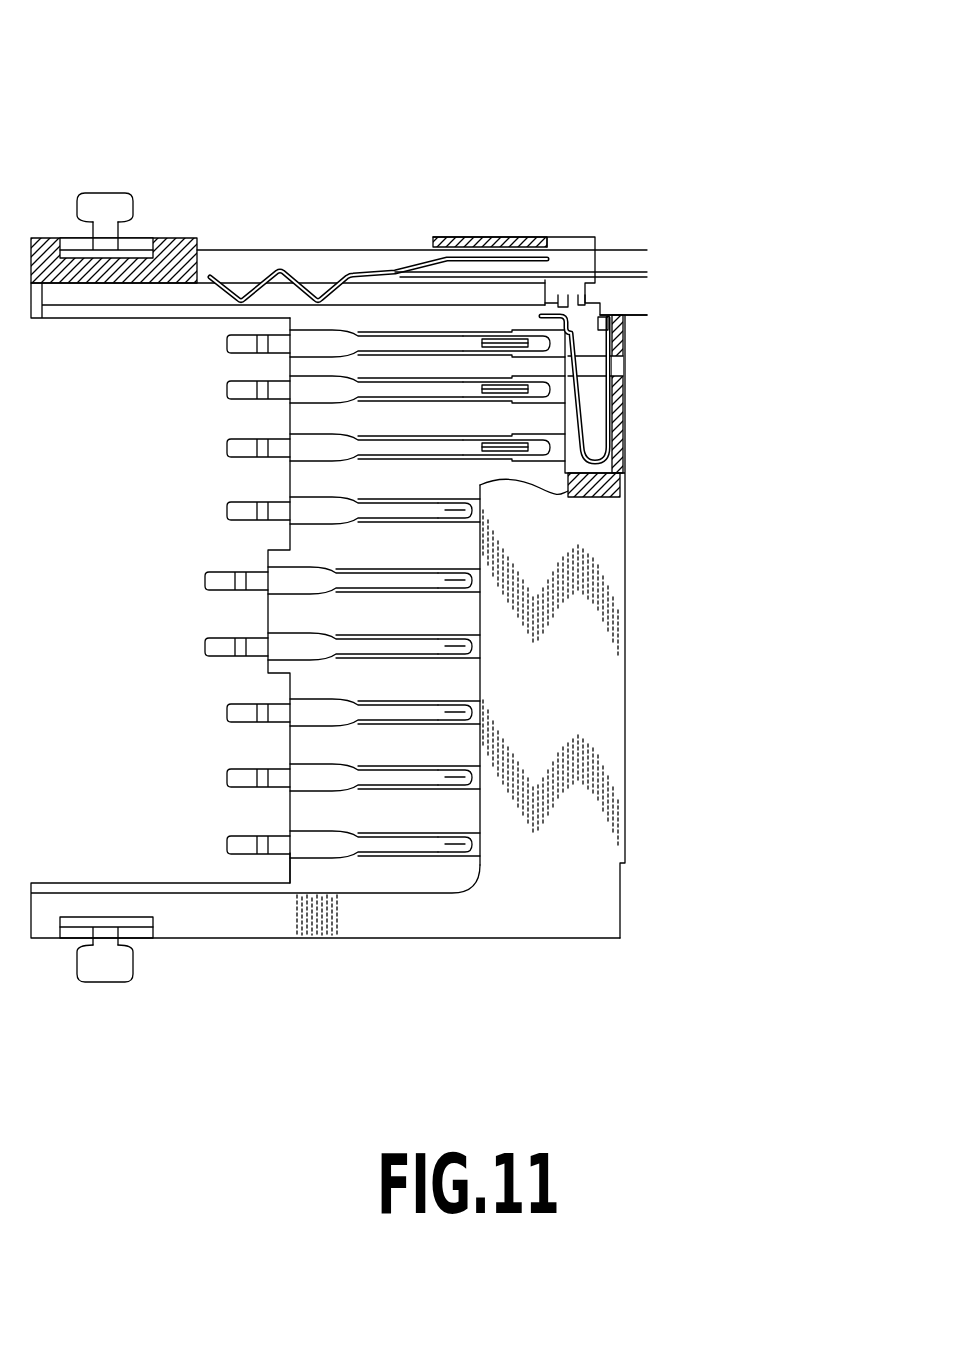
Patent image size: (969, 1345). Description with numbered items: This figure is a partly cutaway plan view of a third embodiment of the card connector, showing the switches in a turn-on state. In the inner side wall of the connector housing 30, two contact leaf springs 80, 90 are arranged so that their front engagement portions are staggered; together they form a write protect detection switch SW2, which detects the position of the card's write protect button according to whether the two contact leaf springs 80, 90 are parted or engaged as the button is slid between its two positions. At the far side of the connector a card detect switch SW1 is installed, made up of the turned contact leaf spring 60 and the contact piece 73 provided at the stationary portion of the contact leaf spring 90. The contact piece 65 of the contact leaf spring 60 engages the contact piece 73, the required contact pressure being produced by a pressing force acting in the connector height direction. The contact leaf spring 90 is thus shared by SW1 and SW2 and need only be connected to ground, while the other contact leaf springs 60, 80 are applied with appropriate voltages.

The connector housing 30 is at (567, 875).
The contact leaf spring 60 is at (603, 464).
The contact piece 65 is at (566, 295).
The contact piece 73 is at (598, 295).
The contact leaf spring 80 is at (415, 265).
The contact leaf spring 90 is at (538, 272).
The card detect switch SW1 is at (678, 327).
The write protect detection switch SW2 is at (472, 173).